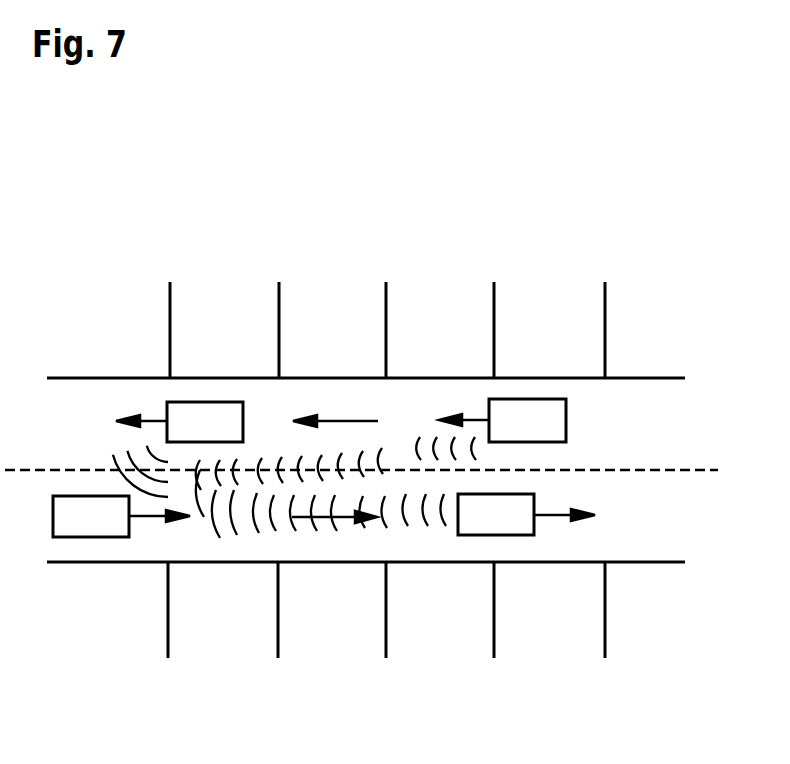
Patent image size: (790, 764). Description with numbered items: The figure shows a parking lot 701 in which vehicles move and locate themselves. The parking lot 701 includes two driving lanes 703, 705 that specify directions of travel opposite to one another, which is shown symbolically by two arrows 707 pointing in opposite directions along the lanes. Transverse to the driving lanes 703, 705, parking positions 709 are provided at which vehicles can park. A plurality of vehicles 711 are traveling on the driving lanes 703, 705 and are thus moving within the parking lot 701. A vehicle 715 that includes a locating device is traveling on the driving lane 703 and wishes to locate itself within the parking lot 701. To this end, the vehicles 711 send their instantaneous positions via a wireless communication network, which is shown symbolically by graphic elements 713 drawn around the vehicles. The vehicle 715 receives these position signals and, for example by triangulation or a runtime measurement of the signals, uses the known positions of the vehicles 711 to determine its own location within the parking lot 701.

The parking lot 701 is at (602, 158).
The driving lane 703 is at (640, 514).
The driving lane 705 is at (627, 423).
The arrows 707 is at (347, 418).
The parking positions 709 is at (68, 313).
The vehicles 711 is at (212, 402).
The graphic elements 713 is at (152, 450).
The vehicle 715 is at (85, 537).